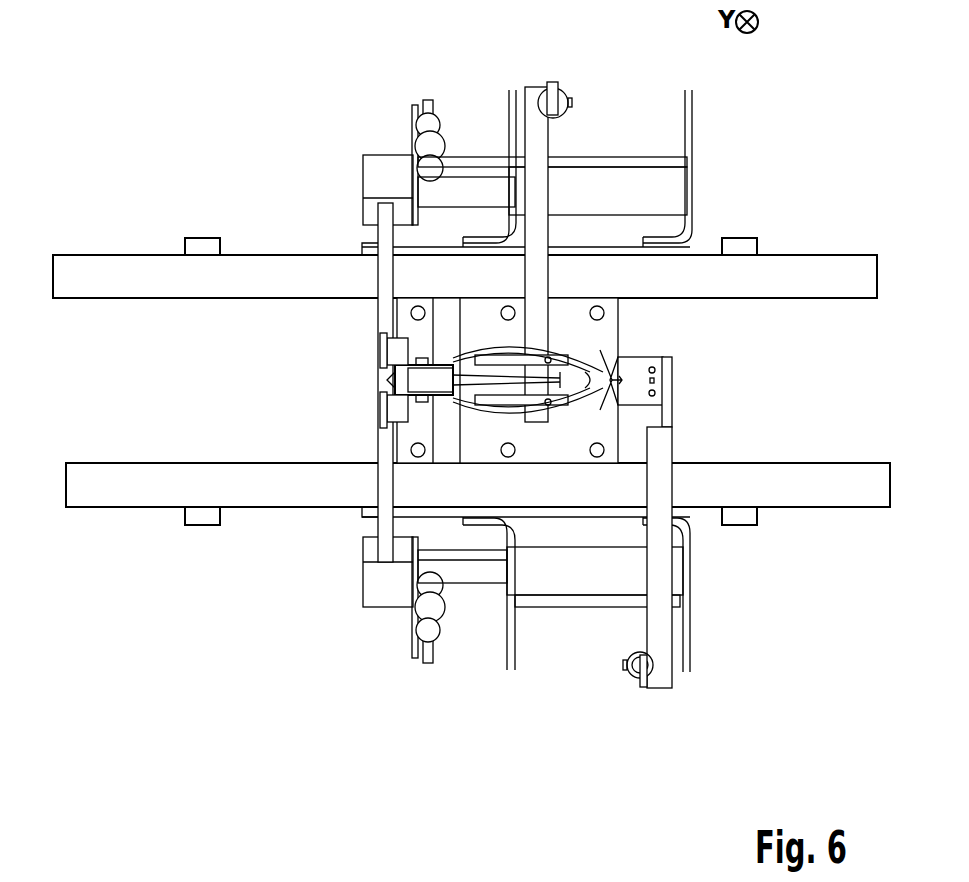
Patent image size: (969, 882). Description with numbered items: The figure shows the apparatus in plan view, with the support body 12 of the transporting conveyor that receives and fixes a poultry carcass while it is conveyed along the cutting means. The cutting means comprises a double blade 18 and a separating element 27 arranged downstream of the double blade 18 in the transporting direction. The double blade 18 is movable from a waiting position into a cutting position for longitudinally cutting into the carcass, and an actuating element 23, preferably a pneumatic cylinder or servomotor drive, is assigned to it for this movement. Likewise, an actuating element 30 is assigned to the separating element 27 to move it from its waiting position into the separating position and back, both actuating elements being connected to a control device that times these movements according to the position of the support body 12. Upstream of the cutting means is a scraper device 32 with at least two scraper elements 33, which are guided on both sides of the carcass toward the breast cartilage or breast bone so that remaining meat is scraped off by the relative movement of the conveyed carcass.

The support body 12 is at (390, 380).
The double blade 18 is at (487, 406).
The actuating element 23 is at (568, 98).
The separating element 27 is at (640, 368).
The actuating element 30 is at (636, 680).
The scraper device 32 is at (353, 170).
The scraper element 33 is at (380, 352).